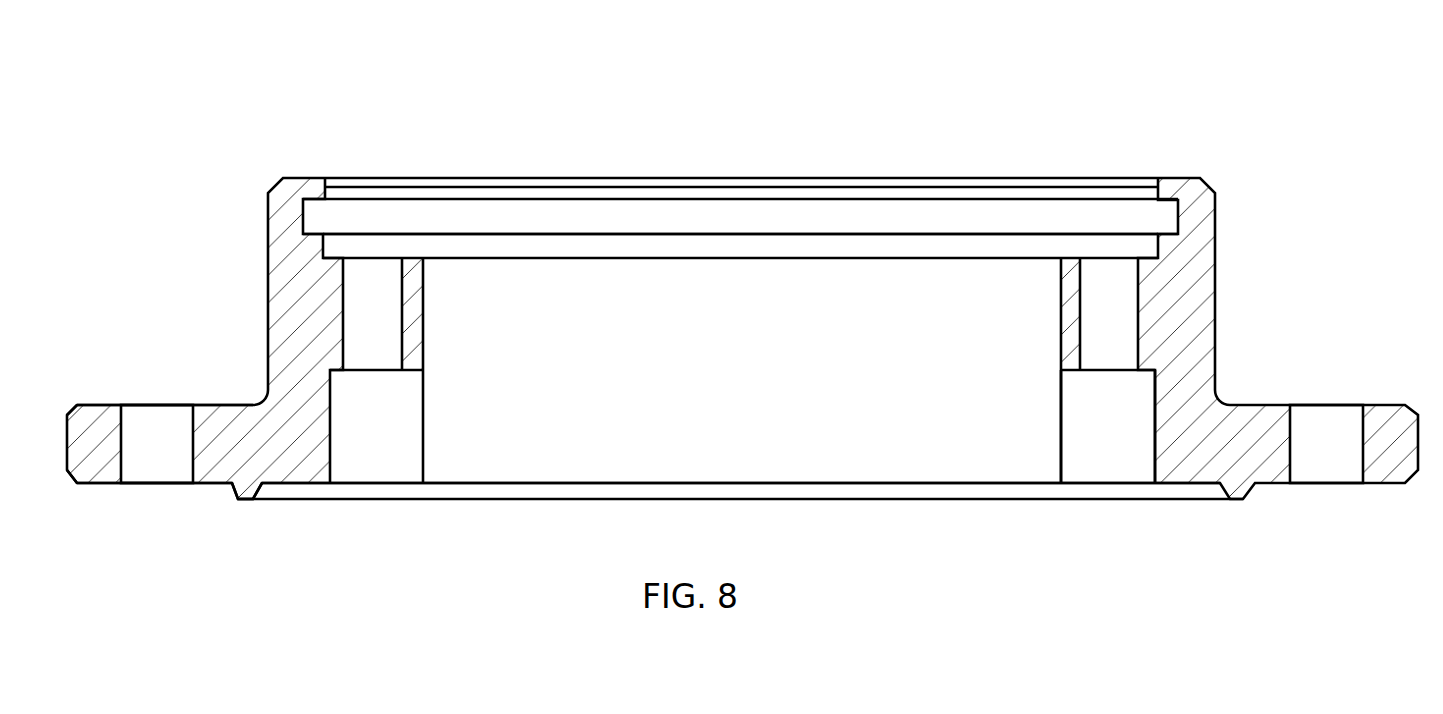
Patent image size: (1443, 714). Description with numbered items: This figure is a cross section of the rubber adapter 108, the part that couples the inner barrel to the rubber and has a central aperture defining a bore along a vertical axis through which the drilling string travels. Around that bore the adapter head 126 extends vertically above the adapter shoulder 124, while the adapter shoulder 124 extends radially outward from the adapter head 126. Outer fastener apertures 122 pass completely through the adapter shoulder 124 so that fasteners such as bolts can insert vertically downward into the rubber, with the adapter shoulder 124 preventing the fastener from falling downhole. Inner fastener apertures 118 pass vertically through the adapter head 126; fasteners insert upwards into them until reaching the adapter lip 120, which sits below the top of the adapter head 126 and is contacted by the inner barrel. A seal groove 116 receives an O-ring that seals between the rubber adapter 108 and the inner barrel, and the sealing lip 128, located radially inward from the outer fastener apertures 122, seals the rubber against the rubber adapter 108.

The rubber adapter 108 is at (290, 185).
The seal groove 116 is at (1177, 222).
The inner fastener apertures 118 is at (1120, 455).
The adapter lip 120 is at (1158, 248).
The outer fastener apertures 122 is at (152, 465).
The adapter shoulder 124 is at (222, 400).
The adapter head 126 is at (1172, 323).
The sealing lip 128 is at (245, 498).